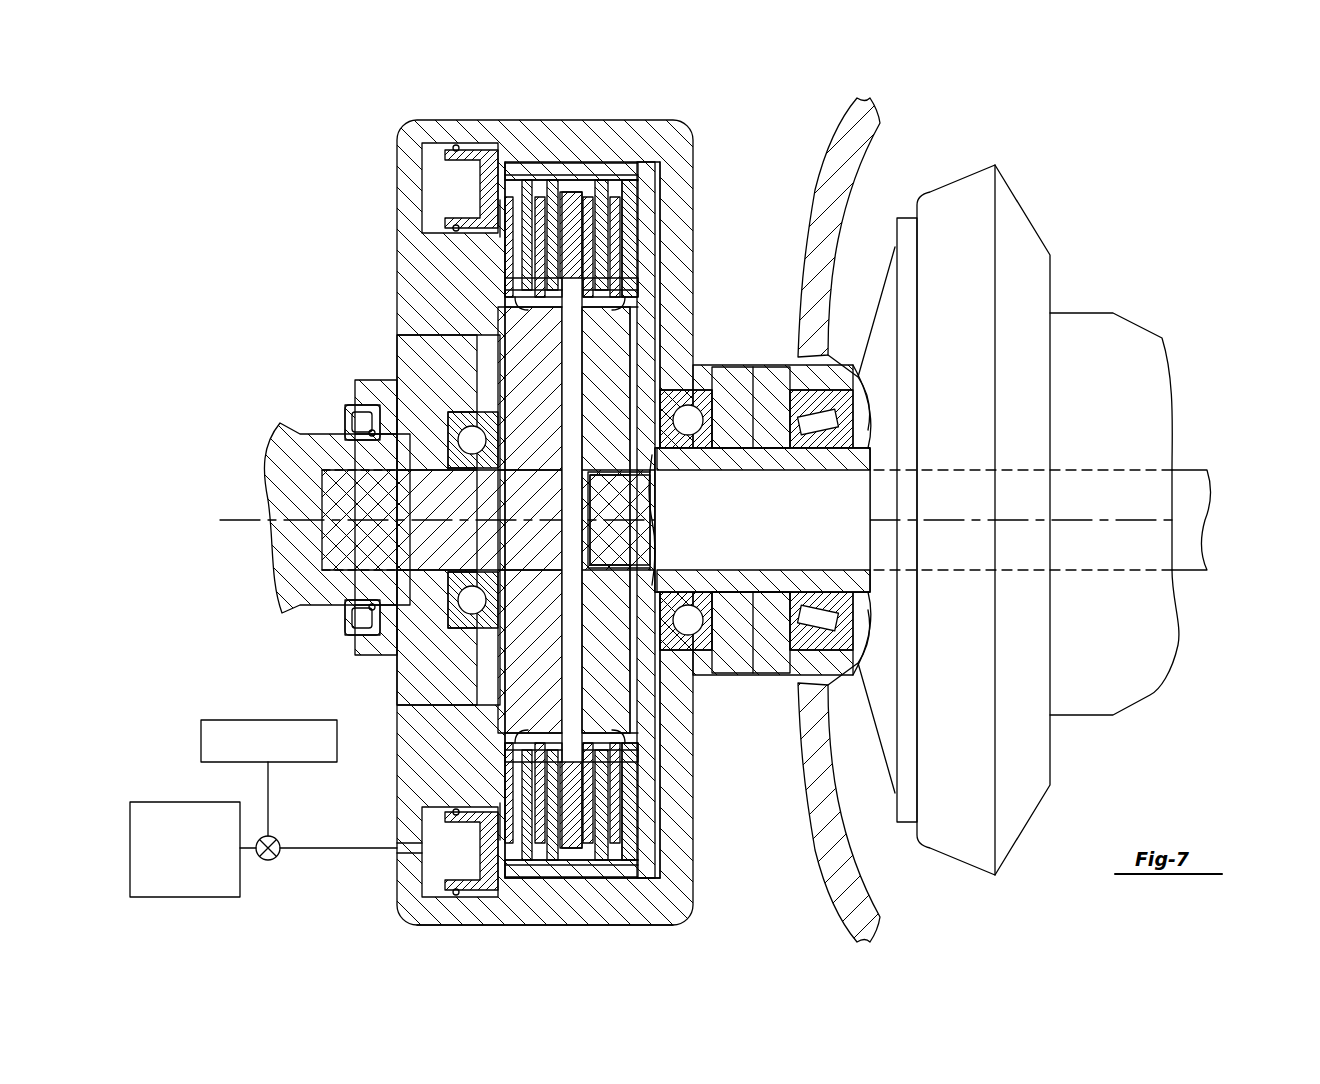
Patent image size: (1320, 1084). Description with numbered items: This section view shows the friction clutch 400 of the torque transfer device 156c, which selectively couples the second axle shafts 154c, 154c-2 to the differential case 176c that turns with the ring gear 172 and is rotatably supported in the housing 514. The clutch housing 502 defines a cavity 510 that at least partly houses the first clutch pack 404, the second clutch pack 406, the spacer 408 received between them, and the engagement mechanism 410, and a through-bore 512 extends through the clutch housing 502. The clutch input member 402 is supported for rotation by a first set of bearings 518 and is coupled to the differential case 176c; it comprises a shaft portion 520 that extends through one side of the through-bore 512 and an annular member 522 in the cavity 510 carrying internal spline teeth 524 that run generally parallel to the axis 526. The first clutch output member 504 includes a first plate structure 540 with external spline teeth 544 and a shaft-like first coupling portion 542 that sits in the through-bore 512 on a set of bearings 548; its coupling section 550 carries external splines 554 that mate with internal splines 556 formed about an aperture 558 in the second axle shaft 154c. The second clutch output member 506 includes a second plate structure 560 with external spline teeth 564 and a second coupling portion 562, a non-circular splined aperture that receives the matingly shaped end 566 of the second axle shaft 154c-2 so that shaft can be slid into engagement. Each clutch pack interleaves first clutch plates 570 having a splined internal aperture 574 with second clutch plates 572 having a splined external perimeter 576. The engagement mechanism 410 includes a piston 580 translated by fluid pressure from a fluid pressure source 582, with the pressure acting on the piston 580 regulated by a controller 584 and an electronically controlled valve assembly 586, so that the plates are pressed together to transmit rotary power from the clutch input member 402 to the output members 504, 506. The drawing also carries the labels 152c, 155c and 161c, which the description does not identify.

The friction clutch 400 is at (583, 875).
The clutch input member 402 is at (627, 165).
The first clutch pack 404 is at (528, 220).
The second clutch pack 406 is at (613, 238).
The spacer 408 is at (570, 197).
The engagement mechanism 410 is at (487, 150).
The wheel hub assembly 152c is at (1140, 318).
The second axle shaft 154c is at (300, 605).
The second axle shaft 154c-2 is at (1192, 465).
The shaft end 155c is at (655, 470).
The torque transfer device 156c is at (317, 262).
The clutch plate 161c is at (513, 300).
The ring gear 172 is at (950, 190).
The differential case 176c is at (890, 328).
The clutch housing 502 is at (405, 825).
The first clutch output member 504 is at (480, 550).
The second clutch output member 506 is at (617, 650).
The cavity 510 is at (653, 890).
The through-bore 512 is at (395, 375).
The housing 514 is at (822, 858).
The first set of bearings 518 is at (680, 395).
The shaft portion 520 is at (727, 467).
The annular member 522 is at (597, 180).
The internal spline teeth 524 is at (580, 177).
The axis 526 is at (1040, 505).
The first plate structure 540 is at (523, 383).
The first coupling portion 542 is at (367, 487).
The external spline teeth 544 is at (530, 298).
The set of bearings 548 is at (480, 622).
The coupling section 550 is at (337, 543).
The external splines 554 is at (392, 556).
The internal splines 556 is at (353, 570).
The aperture 558 is at (345, 488).
The second plate structure 560 is at (590, 672).
The second coupling portion 562 is at (595, 560).
The external spline teeth 564 is at (600, 750).
The matingly shaped end 566 is at (600, 510).
The first clutch plates 570 is at (515, 275).
The second clutch plates 572 is at (552, 190).
The splined internal aperture 574 is at (593, 302).
The splined external perimeter 576 is at (640, 180).
The piston 580 is at (470, 888).
The fluid pressure source 582 is at (188, 802).
The controller 584 is at (248, 720).
The electronically controlled valve assembly 586 is at (272, 862).